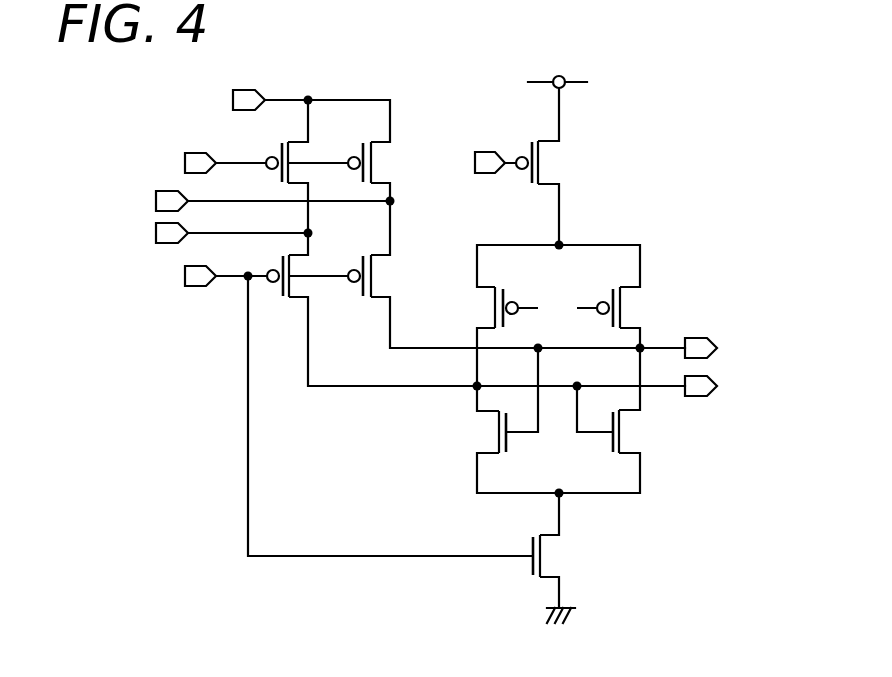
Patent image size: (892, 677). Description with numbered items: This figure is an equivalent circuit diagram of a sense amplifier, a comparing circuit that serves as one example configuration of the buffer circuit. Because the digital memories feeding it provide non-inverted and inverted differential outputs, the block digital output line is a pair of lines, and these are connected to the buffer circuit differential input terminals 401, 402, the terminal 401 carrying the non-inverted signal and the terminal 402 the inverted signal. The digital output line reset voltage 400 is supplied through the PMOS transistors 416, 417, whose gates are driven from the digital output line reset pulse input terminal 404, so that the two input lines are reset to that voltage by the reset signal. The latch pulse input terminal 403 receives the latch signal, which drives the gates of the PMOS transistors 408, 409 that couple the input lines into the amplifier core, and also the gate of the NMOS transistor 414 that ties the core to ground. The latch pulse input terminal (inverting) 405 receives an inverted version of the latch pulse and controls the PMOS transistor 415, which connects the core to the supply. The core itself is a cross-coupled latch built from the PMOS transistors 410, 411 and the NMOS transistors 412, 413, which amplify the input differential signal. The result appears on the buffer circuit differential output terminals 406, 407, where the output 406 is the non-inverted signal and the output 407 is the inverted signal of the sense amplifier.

The digital output line reset voltage 400 is at (232, 99).
The buffer circuit differential input terminal 401 is at (155, 202).
The buffer circuit differential input terminal 402 is at (155, 233).
The latch pulse input terminal 403 is at (184, 276).
The digital output line reset pulse input terminal 404 is at (184, 163).
The latch pulse input terminal (inverting) 405 is at (485, 148).
The buffer circuit differential output terminal 406 is at (717, 340).
The buffer circuit differential output terminal 407 is at (717, 380).
The PMOS transistor 408 is at (380, 274).
The PMOS transistor 409 is at (303, 282).
The PMOS transistor 410 is at (487, 315).
The PMOS transistor 411 is at (632, 306).
The NMOS transistor 412 is at (488, 432).
The NMOS transistor 413 is at (632, 433).
The NMOS transistor 414 is at (552, 557).
The PMOS transistor 415 is at (552, 164).
The PMOS transistor 416 is at (380, 166).
The PMOS transistor 417 is at (295, 142).